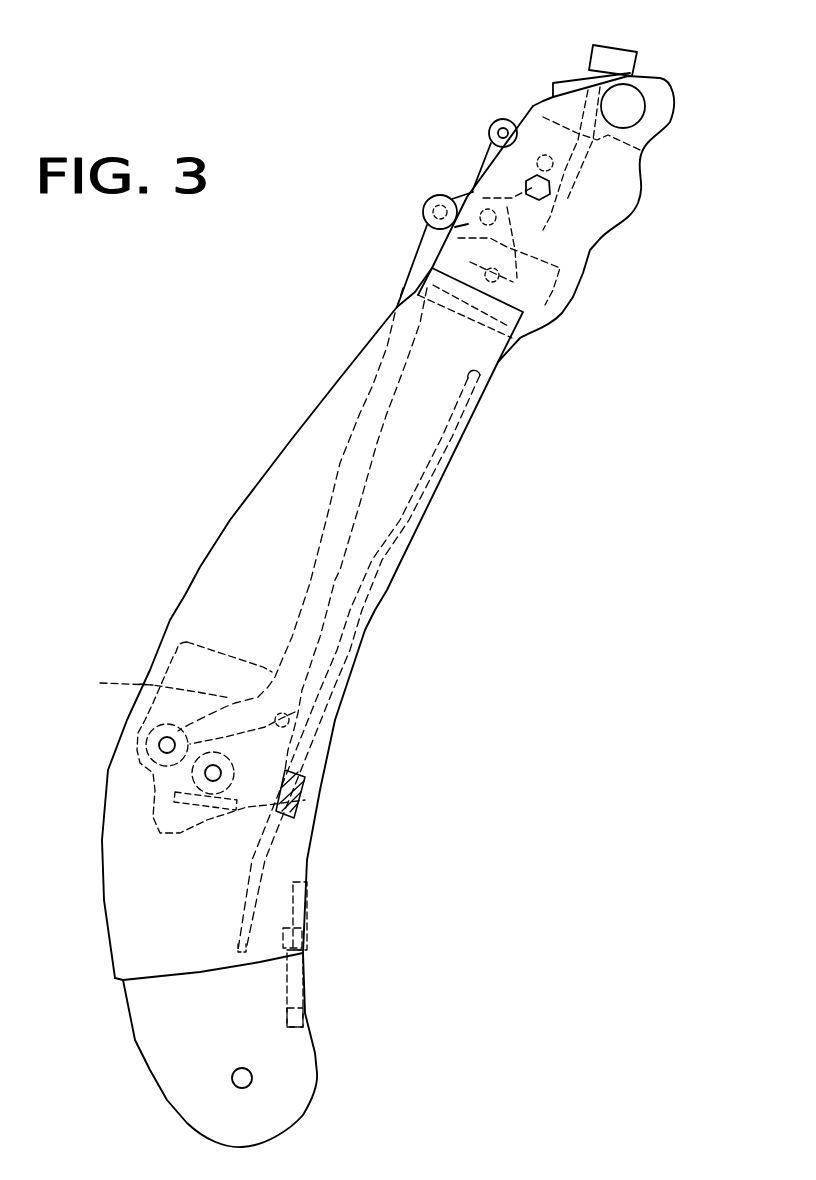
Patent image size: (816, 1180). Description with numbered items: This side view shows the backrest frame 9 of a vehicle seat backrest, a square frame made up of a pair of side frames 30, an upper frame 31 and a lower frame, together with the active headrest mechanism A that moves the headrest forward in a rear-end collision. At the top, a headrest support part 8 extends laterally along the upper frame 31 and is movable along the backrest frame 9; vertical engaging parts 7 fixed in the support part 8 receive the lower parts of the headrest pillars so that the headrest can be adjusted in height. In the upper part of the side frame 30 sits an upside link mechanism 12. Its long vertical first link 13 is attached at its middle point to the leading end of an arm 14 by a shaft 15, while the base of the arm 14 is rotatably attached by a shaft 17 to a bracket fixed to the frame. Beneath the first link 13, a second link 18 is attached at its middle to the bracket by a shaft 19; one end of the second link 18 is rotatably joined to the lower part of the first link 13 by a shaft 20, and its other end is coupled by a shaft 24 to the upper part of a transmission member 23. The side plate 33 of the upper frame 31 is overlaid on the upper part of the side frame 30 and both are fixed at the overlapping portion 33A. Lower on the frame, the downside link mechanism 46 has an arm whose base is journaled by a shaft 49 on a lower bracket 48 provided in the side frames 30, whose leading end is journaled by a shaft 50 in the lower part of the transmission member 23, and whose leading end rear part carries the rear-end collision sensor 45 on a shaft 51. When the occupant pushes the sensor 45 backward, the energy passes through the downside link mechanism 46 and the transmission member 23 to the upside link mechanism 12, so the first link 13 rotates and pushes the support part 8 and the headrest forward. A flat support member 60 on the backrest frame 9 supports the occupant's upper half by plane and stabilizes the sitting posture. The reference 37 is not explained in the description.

The vertical engaging parts 7 is at (622, 63).
The headrest support part 8 is at (588, 90).
The active headrest mechanism A is at (648, 112).
The backrest frame 9 is at (404, 579).
The upside link mechanism 12 is at (555, 236).
The first link 13 is at (577, 173).
The arm 14 is at (472, 165).
The shaft 15 is at (577, 184).
The shaft 17 is at (500, 124).
The second link 18 is at (438, 190).
The shaft 19 is at (433, 252).
The shaft 20 is at (536, 335).
The transmission member 23 is at (341, 470).
The shaft 24 is at (423, 212).
The side frames 30 is at (417, 405).
The upper frame 31 is at (611, 243).
The side plate 33 is at (580, 257).
The overlapping portion 33A is at (540, 303).
The head upper wall 37 is at (613, 225).
The rear-end collision sensor 45 is at (305, 800).
The downside link mechanism 46 is at (140, 684).
The lower bracket 48 is at (212, 647).
The shaft 49 is at (292, 728).
The shaft 50 is at (147, 747).
The shaft 51 is at (150, 788).
The flat support member 60 is at (353, 618).